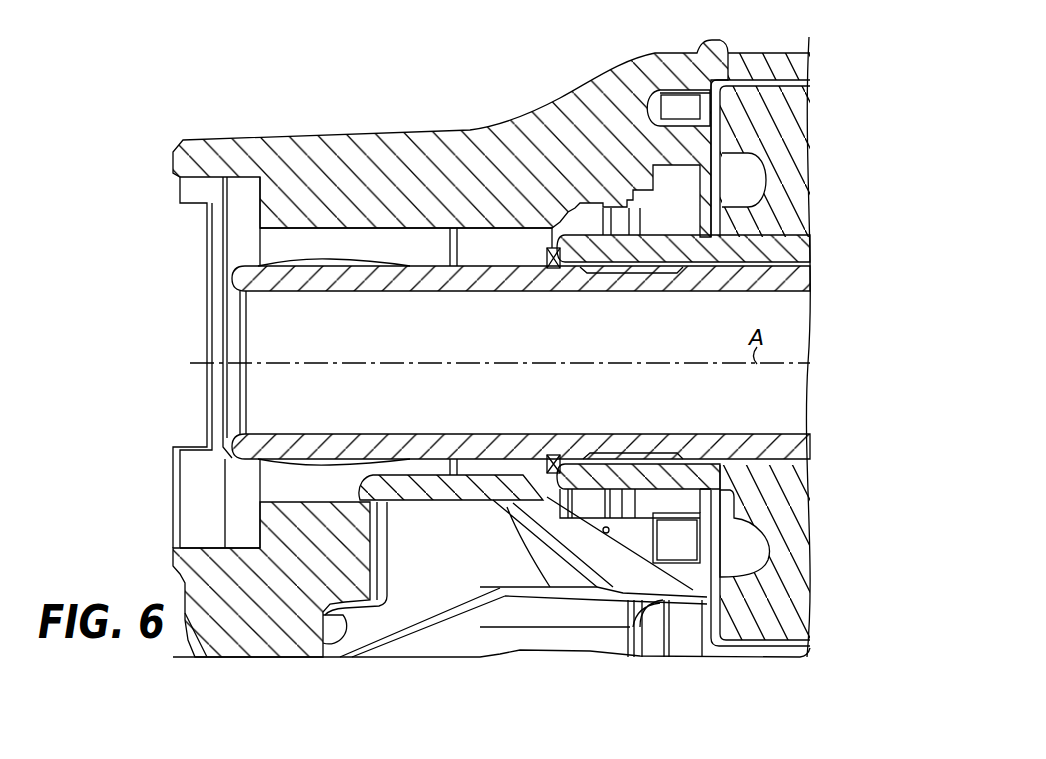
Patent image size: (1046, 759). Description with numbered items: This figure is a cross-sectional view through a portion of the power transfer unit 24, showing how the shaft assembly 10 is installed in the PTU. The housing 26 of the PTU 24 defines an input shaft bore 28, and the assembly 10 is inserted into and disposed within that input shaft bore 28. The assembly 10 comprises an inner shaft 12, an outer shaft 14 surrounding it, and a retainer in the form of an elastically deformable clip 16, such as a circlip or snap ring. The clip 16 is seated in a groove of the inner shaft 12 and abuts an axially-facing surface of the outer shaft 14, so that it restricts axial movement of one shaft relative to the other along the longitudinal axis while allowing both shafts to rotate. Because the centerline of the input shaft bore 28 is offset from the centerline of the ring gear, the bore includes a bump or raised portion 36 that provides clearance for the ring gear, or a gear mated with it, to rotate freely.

The assembly 10 is at (786, 134).
The inner shaft 12 is at (447, 283).
The outer shaft 14 is at (640, 263).
The elastically deformable clip 16 is at (551, 269).
The power transfer unit 24 is at (466, 78).
The housing 26 is at (358, 130).
The input shaft bore 28 is at (340, 229).
The raised portion 36 is at (467, 490).